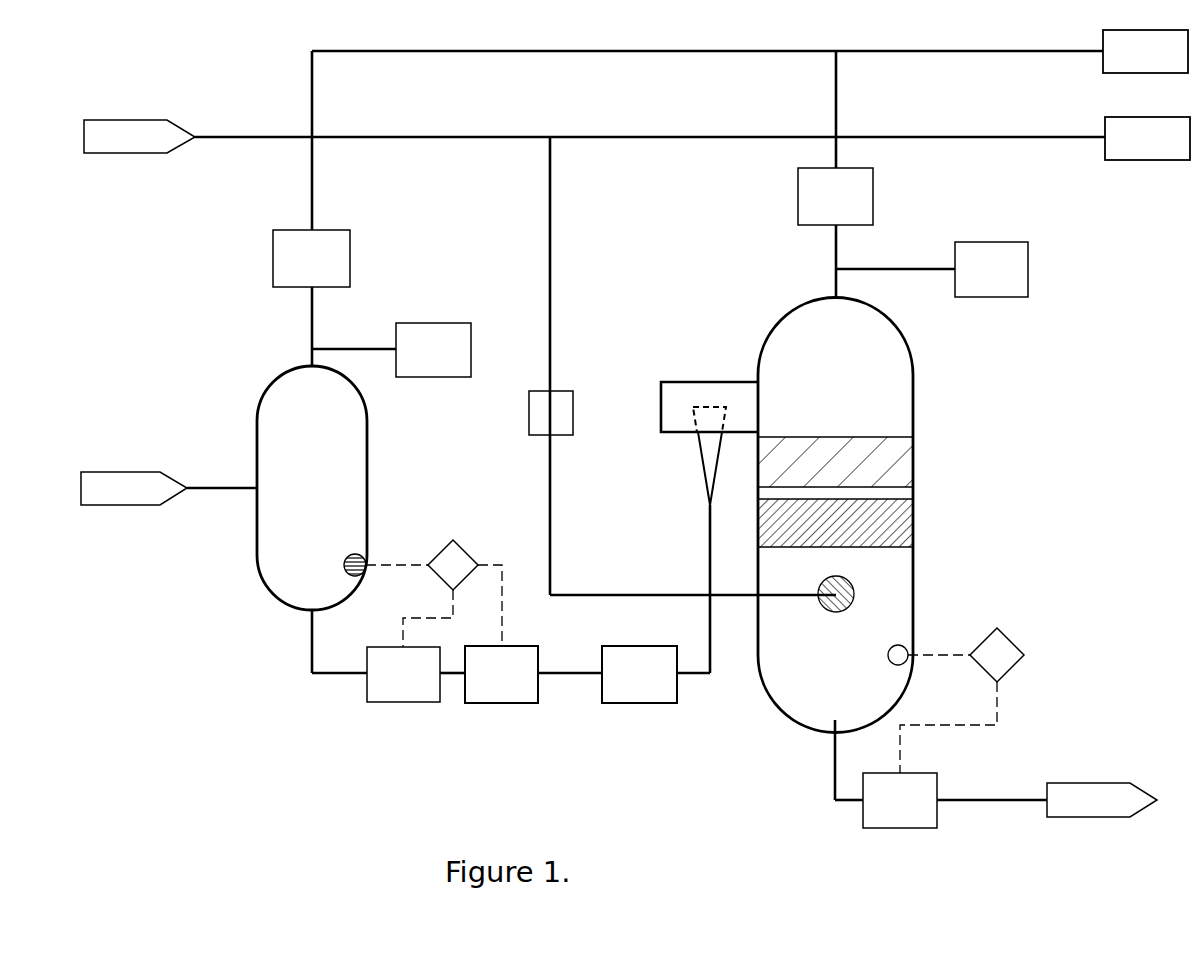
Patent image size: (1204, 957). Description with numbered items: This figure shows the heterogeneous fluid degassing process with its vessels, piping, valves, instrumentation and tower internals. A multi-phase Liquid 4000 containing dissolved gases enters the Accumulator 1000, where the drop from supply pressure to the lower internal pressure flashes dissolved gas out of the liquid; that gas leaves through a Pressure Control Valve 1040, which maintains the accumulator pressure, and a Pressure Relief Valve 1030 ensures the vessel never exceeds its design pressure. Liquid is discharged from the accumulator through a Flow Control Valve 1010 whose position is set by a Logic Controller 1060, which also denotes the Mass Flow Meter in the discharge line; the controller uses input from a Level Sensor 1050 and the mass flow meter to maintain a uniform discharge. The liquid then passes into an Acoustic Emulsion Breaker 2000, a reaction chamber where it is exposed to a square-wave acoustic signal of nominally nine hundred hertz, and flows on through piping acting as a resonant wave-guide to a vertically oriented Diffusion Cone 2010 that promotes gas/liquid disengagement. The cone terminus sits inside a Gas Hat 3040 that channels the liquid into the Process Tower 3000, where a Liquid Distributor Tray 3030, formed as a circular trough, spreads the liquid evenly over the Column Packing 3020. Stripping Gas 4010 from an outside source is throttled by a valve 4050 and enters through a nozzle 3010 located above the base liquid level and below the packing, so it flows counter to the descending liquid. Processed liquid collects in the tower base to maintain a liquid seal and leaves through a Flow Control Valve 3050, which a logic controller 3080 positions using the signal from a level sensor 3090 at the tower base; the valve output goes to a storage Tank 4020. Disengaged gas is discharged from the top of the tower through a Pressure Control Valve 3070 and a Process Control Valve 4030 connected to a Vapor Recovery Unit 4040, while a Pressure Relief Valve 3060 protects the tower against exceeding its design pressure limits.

The accumulator 1000 is at (300, 580).
The flow control valve 1010 is at (390, 692).
The pressure relief valve 1030 is at (430, 330).
The pressure control valve 1040 is at (295, 243).
The level sensor 1050 is at (365, 555).
The logic controller 1060 is at (462, 556).
The acoustic emulsion breaker 2000 is at (640, 692).
The diffusion cone 2010 is at (706, 440).
The process tower 3000 is at (812, 335).
The stripping gas nozzle 3010 is at (855, 585).
The column packing 3020 is at (915, 510).
The liquid distributor tray 3030 is at (900, 455).
The gas hat 3040 is at (712, 398).
The flow control valve 3050 is at (910, 818).
The pressure relief valve 3060 is at (1025, 287).
The pressure control valve 3070 is at (800, 213).
The logic controller 3080 is at (1005, 646).
The level sensor 3090 is at (912, 650).
The liquid 4000 is at (105, 468).
The gas 4010 is at (145, 148).
The tank 4020 is at (1068, 790).
The process control valve 4030 is at (1105, 143).
The vapor recovery unit 4040 is at (1100, 58).
The valve 4050 is at (545, 412).